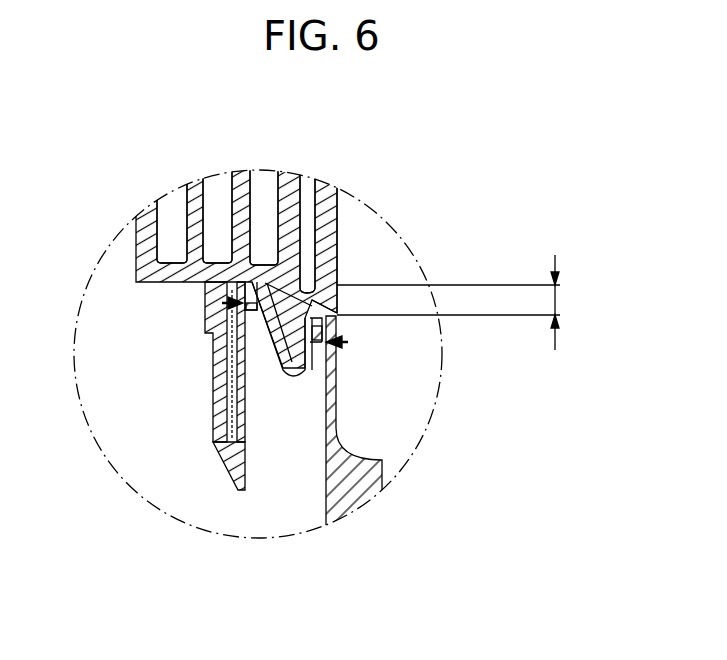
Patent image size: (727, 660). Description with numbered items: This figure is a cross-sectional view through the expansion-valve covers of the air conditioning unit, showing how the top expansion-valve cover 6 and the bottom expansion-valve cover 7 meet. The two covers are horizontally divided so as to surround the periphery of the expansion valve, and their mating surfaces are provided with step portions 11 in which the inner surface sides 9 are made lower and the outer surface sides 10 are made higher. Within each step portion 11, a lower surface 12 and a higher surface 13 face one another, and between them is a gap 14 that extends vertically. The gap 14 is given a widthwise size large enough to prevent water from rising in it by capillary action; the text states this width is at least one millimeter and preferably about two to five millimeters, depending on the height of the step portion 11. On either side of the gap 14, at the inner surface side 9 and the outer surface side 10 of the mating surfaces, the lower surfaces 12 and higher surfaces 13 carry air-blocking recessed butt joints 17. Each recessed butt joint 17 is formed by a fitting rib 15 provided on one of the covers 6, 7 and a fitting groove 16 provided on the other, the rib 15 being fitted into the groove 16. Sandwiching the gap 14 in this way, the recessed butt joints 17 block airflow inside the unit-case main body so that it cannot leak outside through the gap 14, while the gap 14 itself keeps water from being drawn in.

The top expansion-valve cover 6 is at (242, 183).
The bottom expansion-valve cover 7 is at (357, 490).
The inner surface side 9 is at (337, 208).
The outer surface side 10 is at (137, 247).
The step portion 11 is at (467, 302).
The lower surface 12 is at (337, 300).
The higher surface 13 is at (303, 250).
The gap 14 is at (288, 374).
The fitting rib 15 is at (235, 300).
The fitting groove 16 is at (247, 320).
The recessed butt joint 17 is at (228, 303).